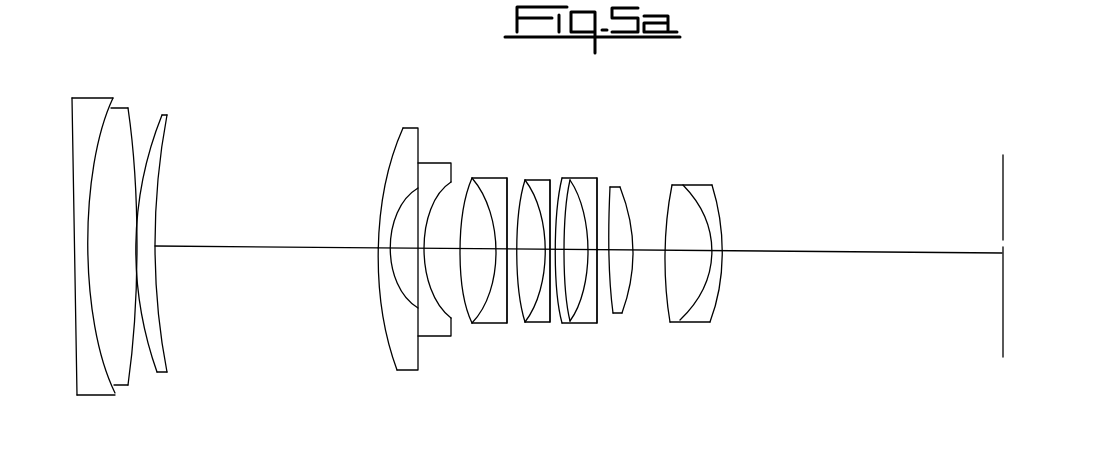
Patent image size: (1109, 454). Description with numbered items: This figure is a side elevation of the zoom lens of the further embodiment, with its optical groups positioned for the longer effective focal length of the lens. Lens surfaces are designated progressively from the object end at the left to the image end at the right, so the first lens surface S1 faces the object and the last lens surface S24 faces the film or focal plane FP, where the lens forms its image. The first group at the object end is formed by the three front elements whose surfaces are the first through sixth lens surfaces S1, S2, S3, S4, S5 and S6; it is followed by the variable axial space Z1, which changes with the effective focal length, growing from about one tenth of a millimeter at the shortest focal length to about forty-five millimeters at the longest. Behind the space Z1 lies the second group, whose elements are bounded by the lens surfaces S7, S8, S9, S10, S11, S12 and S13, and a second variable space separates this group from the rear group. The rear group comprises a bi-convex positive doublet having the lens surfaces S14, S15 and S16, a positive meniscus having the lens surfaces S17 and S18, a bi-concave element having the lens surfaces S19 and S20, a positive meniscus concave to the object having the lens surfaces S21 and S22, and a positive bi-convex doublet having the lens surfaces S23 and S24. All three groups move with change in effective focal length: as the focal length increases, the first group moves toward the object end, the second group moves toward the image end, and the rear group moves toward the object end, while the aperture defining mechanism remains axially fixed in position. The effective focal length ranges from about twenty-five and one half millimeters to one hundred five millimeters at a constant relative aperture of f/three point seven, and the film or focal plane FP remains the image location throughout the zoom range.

The first lens surface S1 is at (74, 118).
The second lens surface S2 is at (103, 122).
The third lens surface S3 is at (130, 125).
The fourth lens surface S4 is at (157, 160).
The fifth lens surface S5 is at (160, 197).
The variable axial space Z1 is at (287, 247).
The sixth lens surface S6 is at (392, 168).
The seventh lens surface S7 is at (395, 218).
The eighth lens surface S8 is at (436, 162).
The ninth lens surface S9 is at (466, 182).
The tenth lens surface S10 is at (473, 178).
The eleventh lens surface S11 is at (461, 322).
The twelfth lens surface S12 is at (495, 323).
The thirteenth lens surface S13 is at (525, 177).
The fourteenth lens surface S14 is at (536, 183).
The fifteenth lens surface S15 is at (536, 321).
The sixteenth lens surface S16 is at (583, 177).
The seventeenth lens surface S17 is at (577, 323).
The eighteenth lens surface S18 is at (595, 182).
The nineteenth lens surface S19 is at (598, 318).
The twentieth lens surface S20 is at (615, 210).
The twenty-first lens surface S21 is at (627, 292).
The twenty-second lens surface S22 is at (683, 187).
The twenty-third lens surface S23 is at (707, 212).
The twenty-fourth lens surface S24 is at (722, 237).
The film or focal plane FP is at (1002, 190).